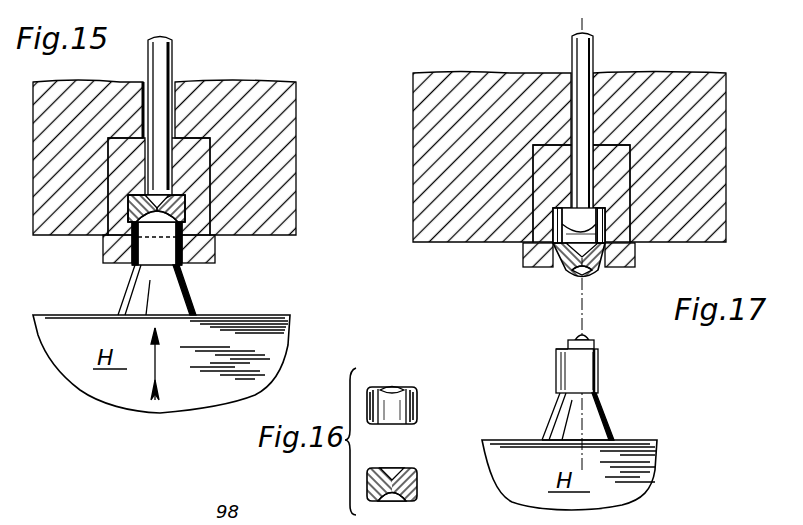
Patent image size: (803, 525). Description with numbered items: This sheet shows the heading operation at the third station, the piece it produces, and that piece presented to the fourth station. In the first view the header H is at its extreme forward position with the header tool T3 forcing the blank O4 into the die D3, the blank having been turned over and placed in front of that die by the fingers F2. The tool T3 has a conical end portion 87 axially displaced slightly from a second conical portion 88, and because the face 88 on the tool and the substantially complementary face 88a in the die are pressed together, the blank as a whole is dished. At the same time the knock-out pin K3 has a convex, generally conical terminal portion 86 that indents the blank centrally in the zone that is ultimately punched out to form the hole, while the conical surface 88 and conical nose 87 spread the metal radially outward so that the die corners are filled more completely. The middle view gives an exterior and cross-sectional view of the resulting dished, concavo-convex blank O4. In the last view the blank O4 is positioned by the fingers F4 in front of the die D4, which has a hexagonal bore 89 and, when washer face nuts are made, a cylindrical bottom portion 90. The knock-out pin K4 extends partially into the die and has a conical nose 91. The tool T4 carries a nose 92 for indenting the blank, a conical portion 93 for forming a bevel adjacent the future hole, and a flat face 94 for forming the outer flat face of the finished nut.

In FIG. 15, the die D3 is at (188, 138).
In FIG. 15, the conically shaped terminal portion 86 is at (172, 200).
In FIG. 15, the face in the die 88a is at (130, 193).
In FIG. 15, the second conical portion 88 is at (128, 216).
In FIG. 15, the knock-out pin K3 is at (165, 46).
In FIG. 15, the blank O4 is at (184, 206).
In FIG. 16, the blank O4 is at (417, 401).
In FIG. 17, the blank O4 is at (598, 272).
In FIG. 15, the header tool T3 is at (180, 264).
In FIG. 15, the conical end portion 87 is at (134, 266).
In FIG. 15, the fingers F2 is at (215, 251).
In FIG. 17, the die D4 is at (630, 162).
In FIG. 17, the conical nose 91 is at (540, 178).
In FIG. 17, the knock-out pin K4 is at (592, 44).
In FIG. 17, the hexagonal bore 89 is at (600, 240).
In FIG. 17, the cylindrical bottom portion 90 is at (592, 218).
In FIG. 17, the fingers F4 is at (635, 258).
In FIG. 17, the nose 92 is at (586, 336).
In FIG. 17, the conical portion 93 is at (595, 343).
In FIG. 17, the tool T4 is at (590, 375).
In FIG. 17, the flat face 94 is at (560, 346).